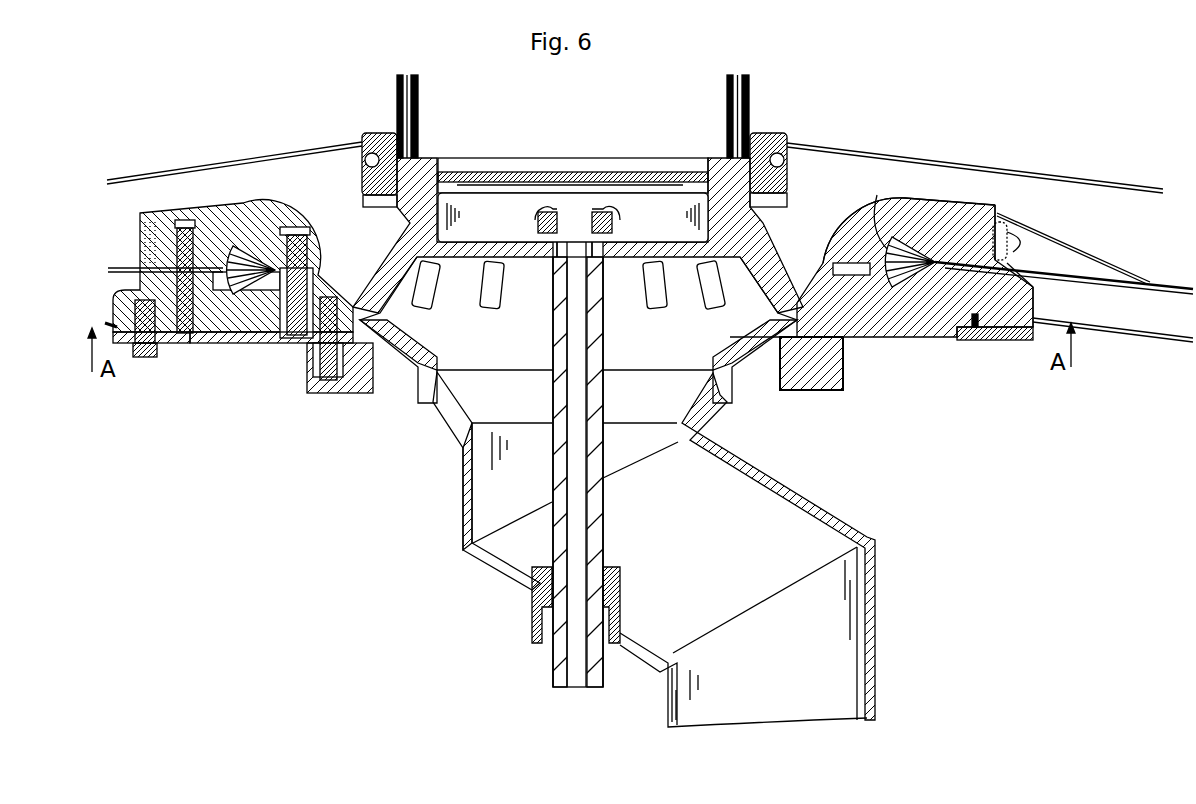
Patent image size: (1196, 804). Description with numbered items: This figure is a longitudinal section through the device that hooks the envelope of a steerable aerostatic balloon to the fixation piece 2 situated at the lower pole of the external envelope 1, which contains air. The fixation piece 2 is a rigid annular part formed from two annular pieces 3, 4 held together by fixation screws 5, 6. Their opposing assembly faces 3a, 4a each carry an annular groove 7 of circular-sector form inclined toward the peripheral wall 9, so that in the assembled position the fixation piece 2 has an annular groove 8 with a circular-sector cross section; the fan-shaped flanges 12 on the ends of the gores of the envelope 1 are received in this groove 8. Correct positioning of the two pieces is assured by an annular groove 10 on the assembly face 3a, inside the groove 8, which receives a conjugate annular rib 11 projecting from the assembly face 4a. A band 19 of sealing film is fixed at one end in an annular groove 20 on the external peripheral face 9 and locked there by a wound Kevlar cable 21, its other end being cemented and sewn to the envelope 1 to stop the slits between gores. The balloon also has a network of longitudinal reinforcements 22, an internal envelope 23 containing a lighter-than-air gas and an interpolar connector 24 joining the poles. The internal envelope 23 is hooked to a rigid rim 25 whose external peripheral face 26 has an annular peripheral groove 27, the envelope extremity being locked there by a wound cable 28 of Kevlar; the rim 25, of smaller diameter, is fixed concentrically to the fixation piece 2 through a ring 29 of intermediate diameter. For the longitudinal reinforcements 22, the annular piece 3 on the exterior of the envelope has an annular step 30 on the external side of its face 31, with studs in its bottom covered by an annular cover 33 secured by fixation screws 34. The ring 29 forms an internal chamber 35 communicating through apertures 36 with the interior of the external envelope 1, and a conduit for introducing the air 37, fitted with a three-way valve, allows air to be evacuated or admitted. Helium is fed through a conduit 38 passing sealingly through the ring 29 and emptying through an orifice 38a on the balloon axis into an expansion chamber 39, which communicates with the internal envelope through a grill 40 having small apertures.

The external envelope 1 is at (1115, 277).
The fixation piece 2 is at (1033, 289).
The annular piece 3 is at (908, 315).
The assembly face 3a is at (965, 290).
The annular piece 4 is at (905, 207).
The assembly face 4a is at (960, 240).
The fixation screw 5 is at (203, 340).
The fixation screw 6 is at (277, 333).
The annular groove 7 is at (877, 318).
The annular groove 8 is at (893, 255).
The external peripheral face 9 is at (123, 288).
The annular groove 10 is at (328, 300).
The annular rib 11 is at (310, 280).
The fan-shaped flange 12 is at (877, 195).
The band of sealing film 19 is at (1103, 262).
The annular groove 20 is at (1013, 250).
The cable 21 is at (1005, 238).
The longitudinal reinforcement 22 is at (1133, 340).
The internal envelope 23 is at (227, 160).
The interpolar connector 24 is at (728, 102).
The rim 25 is at (762, 133).
The external peripheral face 26 is at (362, 187).
The annular peripheral groove 27 is at (362, 140).
The cable 28 is at (782, 158).
The ring 29 is at (423, 165).
The annular step 30 is at (198, 340).
The face 31 is at (237, 340).
The annular cover 33 is at (1003, 340).
The fixation screw 34 is at (150, 357).
The internal chamber 35 is at (578, 330).
The aperture 36 is at (662, 296).
The conduit for introducing the air 37 is at (845, 530).
The conduit 38 is at (604, 528).
The orifice 38a is at (578, 208).
The expansion chamber 39 is at (527, 210).
The grill 40 is at (512, 172).